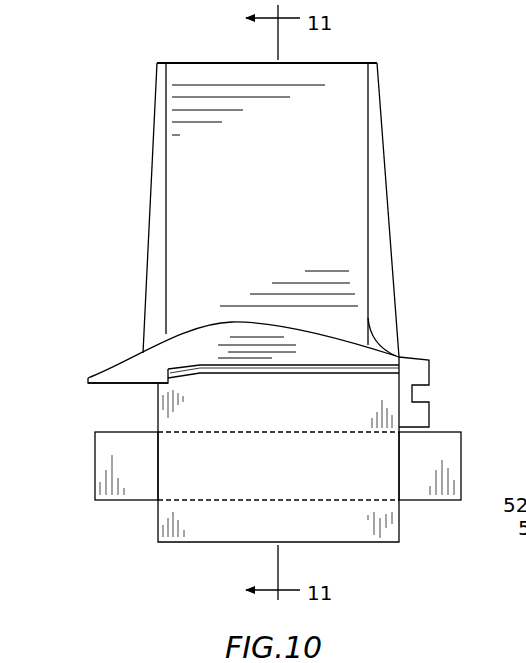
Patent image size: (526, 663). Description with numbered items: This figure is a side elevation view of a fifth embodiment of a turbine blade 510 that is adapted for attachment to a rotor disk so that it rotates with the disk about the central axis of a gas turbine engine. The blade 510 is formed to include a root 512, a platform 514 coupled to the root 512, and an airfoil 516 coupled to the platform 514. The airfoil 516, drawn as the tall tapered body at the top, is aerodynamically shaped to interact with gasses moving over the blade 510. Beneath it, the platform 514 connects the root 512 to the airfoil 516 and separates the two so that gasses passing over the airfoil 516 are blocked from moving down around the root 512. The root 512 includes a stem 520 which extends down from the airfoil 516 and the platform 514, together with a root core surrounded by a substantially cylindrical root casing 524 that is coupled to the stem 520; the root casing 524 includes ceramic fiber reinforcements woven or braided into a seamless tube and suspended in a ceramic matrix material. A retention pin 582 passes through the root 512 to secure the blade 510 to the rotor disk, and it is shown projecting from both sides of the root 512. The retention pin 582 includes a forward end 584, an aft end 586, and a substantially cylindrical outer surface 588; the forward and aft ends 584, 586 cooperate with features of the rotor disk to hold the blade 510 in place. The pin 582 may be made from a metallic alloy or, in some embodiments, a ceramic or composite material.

The turbine blade 510 is at (422, 60).
The airfoil 516 is at (133, 158).
The platform 514 is at (126, 351).
The root 512 is at (106, 419).
The stem 520 is at (154, 405).
The root casing 524 is at (208, 514).
The forward end 584 is at (90, 462).
The retention pin 582 is at (90, 482).
The aft end 586 is at (464, 460).
The substantially cylindrical outer surface 588 is at (412, 490).